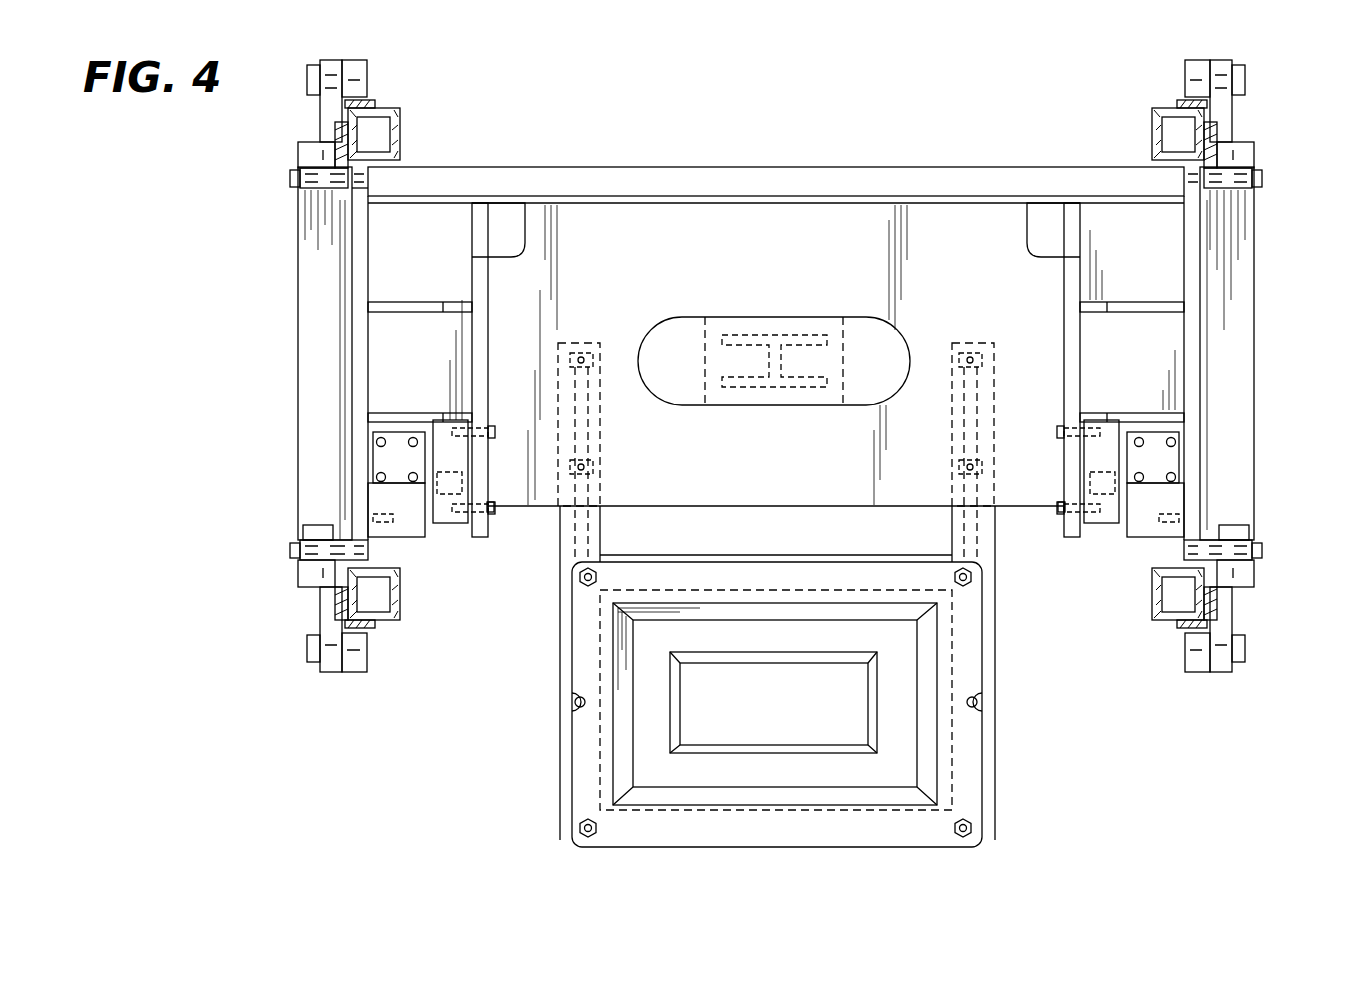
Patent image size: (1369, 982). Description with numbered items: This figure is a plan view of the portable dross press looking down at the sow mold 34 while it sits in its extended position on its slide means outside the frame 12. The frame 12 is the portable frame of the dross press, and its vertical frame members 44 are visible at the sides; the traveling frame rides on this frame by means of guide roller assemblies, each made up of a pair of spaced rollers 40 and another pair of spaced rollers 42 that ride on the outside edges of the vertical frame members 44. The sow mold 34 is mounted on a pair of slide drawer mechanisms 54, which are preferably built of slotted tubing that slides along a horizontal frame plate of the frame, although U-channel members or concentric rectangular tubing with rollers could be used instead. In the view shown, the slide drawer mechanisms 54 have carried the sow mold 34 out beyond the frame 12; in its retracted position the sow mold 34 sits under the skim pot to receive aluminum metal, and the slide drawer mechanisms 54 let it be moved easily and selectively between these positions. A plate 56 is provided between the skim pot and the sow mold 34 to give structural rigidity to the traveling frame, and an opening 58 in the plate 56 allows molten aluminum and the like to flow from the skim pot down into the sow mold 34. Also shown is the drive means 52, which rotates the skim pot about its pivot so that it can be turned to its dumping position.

The frame 12 is at (402, 133).
The sow mold 34 is at (865, 848).
The spaced rollers 40 is at (1185, 76).
The spaced rollers 42 is at (1255, 153).
The vertical frame members 44 is at (376, 104).
The drive means 52 is at (378, 466).
The slide drawer mechanisms 54 is at (560, 626).
The plate 56 is at (1025, 508).
The opening 58 is at (656, 322).